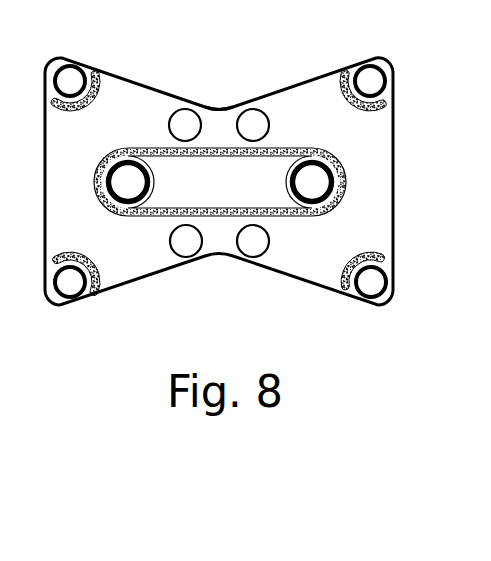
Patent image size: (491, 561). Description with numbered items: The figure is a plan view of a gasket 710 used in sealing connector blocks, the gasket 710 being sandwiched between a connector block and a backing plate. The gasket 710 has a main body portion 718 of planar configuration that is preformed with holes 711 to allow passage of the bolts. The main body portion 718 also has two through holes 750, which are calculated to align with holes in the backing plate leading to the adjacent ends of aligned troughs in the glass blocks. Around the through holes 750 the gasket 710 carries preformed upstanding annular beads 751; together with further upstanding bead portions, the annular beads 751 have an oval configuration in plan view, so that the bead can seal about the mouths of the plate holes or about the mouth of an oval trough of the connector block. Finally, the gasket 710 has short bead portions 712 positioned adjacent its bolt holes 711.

The gasket 710 is at (165, 96).
The holes 711 is at (365, 72).
The short bead portions 712 is at (365, 110).
The main body portion 718 is at (220, 127).
The through holes 750 is at (123, 192).
The annular beads 751 is at (130, 147).